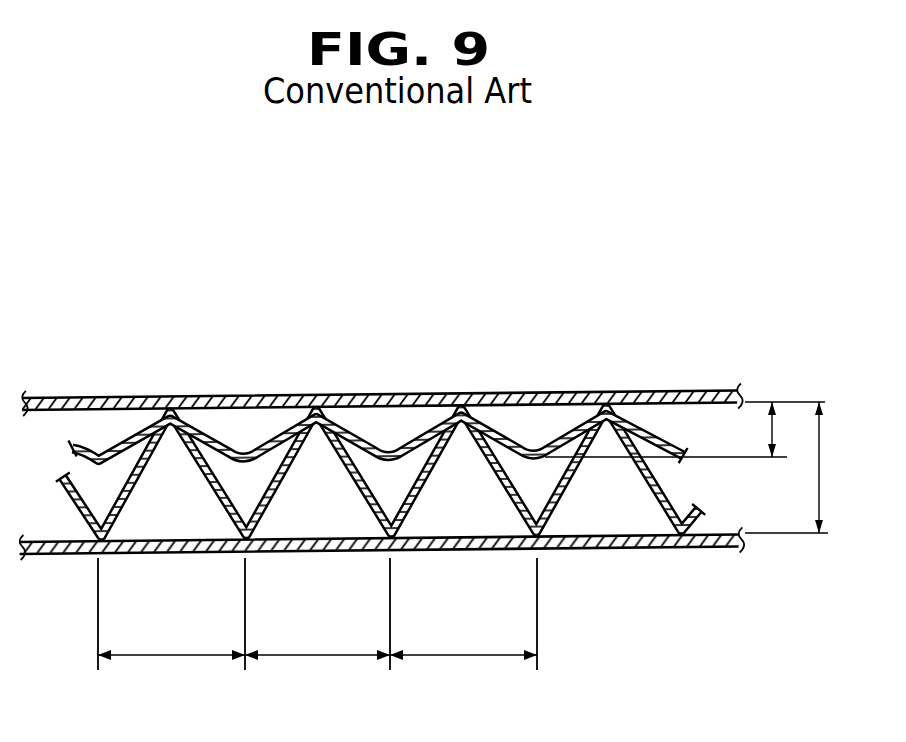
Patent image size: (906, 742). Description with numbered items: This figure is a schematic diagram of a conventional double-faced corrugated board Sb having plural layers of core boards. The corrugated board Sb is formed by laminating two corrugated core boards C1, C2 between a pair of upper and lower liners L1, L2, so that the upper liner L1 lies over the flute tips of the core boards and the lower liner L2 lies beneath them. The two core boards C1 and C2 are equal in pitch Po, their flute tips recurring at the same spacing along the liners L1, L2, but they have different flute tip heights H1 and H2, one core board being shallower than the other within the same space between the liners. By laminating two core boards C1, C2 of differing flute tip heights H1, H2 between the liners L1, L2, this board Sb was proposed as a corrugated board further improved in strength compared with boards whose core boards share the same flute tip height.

The double-faced corrugated board Sb is at (104, 376).
The upper liner L1 is at (215, 397).
The lower liner L2 is at (610, 555).
The core board C1 is at (420, 437).
The core board C2 is at (487, 453).
The flute tip height H1 is at (685, 429).
The flute tip height H2 is at (805, 467).
The pitch Po is at (317, 614).